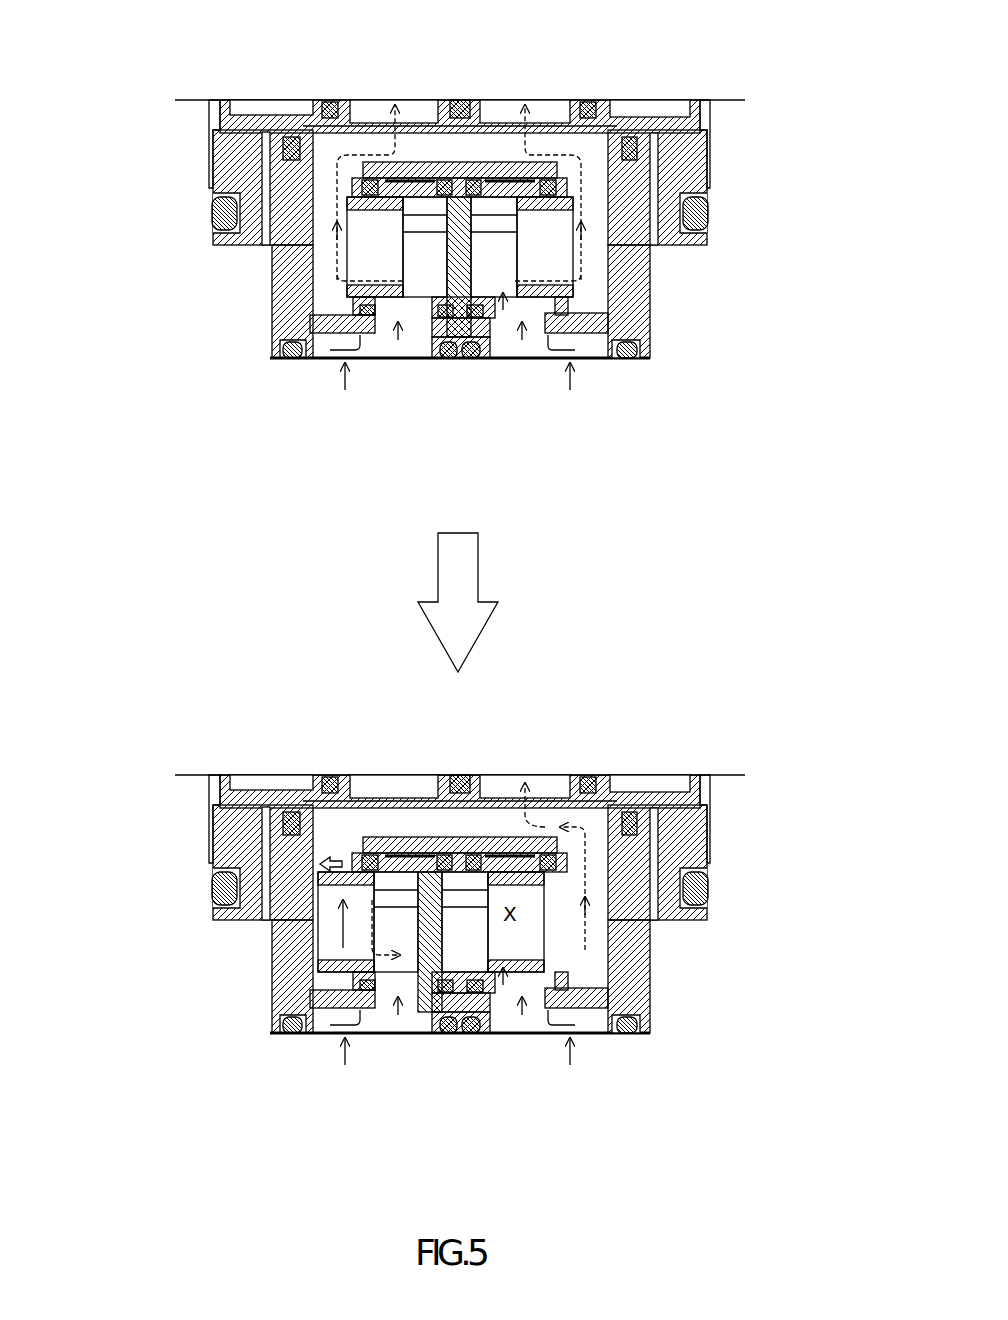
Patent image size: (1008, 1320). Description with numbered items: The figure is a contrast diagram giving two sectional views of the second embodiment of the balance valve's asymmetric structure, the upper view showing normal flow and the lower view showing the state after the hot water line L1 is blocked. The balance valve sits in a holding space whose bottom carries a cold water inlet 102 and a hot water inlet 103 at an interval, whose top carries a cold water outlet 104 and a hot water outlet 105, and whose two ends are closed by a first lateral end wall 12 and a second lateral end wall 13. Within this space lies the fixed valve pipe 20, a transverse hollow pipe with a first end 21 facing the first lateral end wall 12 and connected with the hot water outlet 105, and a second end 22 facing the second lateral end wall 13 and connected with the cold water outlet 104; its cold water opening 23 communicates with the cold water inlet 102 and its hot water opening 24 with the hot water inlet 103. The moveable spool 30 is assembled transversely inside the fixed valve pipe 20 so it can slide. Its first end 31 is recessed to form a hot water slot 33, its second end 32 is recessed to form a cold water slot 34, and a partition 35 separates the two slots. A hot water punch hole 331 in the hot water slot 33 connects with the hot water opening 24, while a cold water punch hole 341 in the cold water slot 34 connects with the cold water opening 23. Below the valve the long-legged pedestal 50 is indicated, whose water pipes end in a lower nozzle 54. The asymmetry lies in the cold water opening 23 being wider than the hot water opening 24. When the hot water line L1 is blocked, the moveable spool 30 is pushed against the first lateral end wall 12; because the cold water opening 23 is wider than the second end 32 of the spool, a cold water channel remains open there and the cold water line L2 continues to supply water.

The first lateral end wall 12 is at (318, 242).
The second lateral end wall 13 is at (603, 250).
The fixed valve pipe 20 is at (278, 340).
The first end 21 is at (305, 320).
The second end 22 is at (696, 208).
The cold water opening 23 is at (503, 360).
The hot water opening 24 is at (390, 360).
The moveable spool 30 is at (583, 205).
The first end 31 is at (355, 300).
The second end 32 is at (587, 300).
The hot water slot 33 is at (368, 245).
The cold water slot 34 is at (560, 250).
The partition 35 is at (477, 360).
The long-legged pedestal 50 is at (658, 370).
The lower nozzle 54 is at (372, 362).
The cold water inlet 102 is at (585, 352).
The hot water inlet 103 is at (317, 360).
The cold water outlet 104 is at (640, 125).
The hot water outlet 105 is at (377, 125).
The hot water punch hole 331 is at (427, 360).
The cold water punch hole 341 is at (533, 360).
The hot water line L1 is at (395, 118).
The cold water line L2 is at (540, 118).